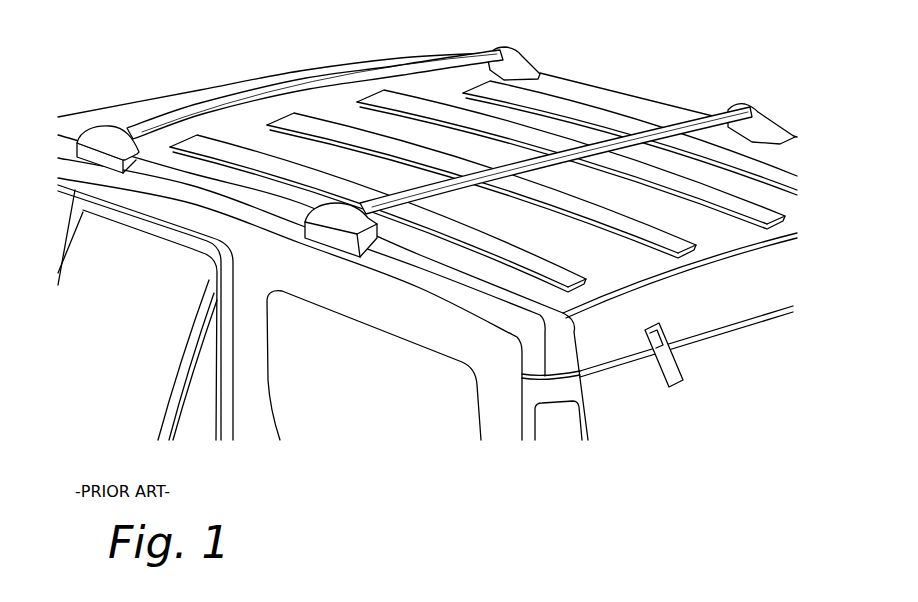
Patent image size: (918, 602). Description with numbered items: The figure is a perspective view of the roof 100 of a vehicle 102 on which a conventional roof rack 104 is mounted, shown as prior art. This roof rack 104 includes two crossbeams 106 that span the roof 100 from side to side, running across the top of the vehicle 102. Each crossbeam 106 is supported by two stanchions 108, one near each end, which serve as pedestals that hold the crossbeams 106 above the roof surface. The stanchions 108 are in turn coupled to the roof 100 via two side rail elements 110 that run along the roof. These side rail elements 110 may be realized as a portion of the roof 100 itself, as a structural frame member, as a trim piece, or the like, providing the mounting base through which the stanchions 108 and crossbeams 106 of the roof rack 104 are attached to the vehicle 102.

The roof 100 is at (720, 237).
The vehicle 102 is at (446, 150).
The roof rack 104 is at (446, 150).
The crossbeam 106 is at (327, 73).
The stanchion 108 is at (100, 137).
The side rail element 110 is at (487, 287).